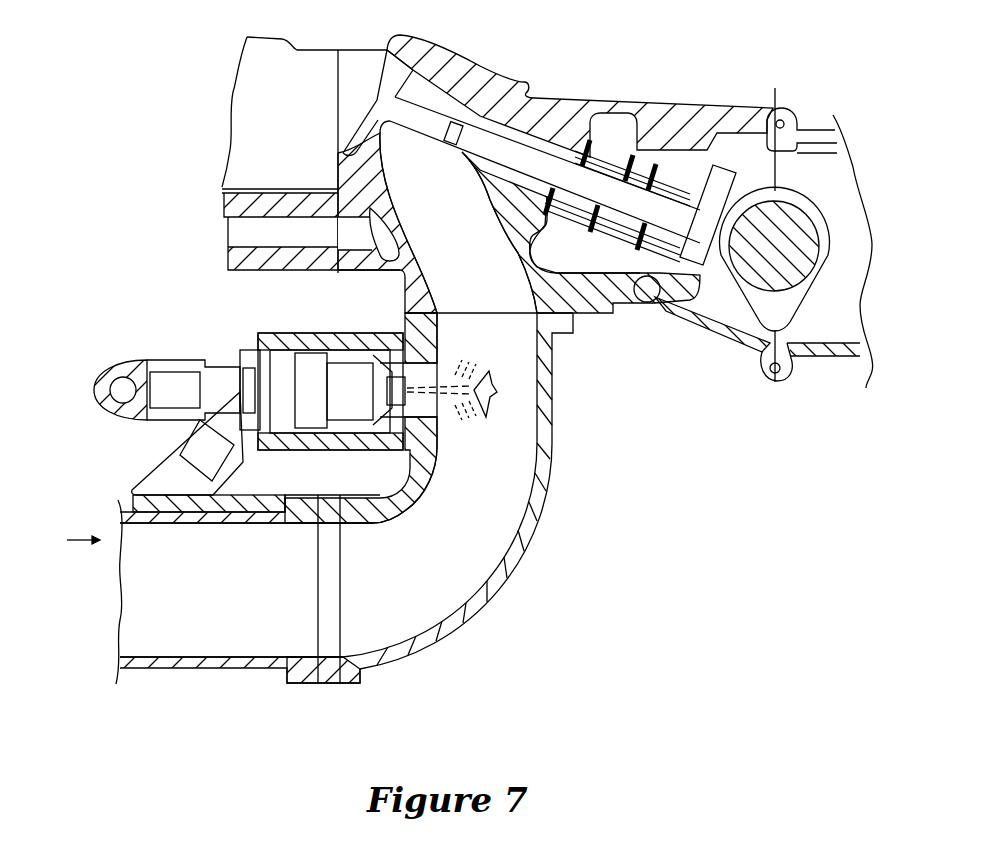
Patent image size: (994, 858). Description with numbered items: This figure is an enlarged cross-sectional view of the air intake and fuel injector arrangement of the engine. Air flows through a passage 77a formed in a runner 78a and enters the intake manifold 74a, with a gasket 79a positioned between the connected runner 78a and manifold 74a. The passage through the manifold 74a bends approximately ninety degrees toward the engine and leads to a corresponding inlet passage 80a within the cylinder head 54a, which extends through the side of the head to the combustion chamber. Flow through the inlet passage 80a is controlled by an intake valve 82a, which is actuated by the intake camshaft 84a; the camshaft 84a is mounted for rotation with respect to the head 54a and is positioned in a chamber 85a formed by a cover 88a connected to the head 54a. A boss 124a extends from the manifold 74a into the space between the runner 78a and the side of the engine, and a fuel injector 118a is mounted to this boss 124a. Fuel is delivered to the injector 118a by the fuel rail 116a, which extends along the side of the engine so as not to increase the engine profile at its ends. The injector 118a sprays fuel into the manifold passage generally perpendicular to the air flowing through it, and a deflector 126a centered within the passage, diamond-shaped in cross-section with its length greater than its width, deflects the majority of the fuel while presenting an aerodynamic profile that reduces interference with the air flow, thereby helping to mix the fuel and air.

The cylinder head 54a is at (668, 98).
The cover 88a is at (808, 130).
The intake valve 82a is at (360, 107).
The inlet passage 80a is at (497, 302).
The chamber 85a is at (715, 307).
The intake camshaft 84a is at (758, 283).
The fuel injector 118a is at (240, 350).
The boss 124a is at (293, 333).
The fuel rail 116a is at (127, 387).
The deflector 126a is at (490, 408).
The intake manifold 74a is at (522, 553).
The passage 77a is at (133, 583).
The runner 78a is at (196, 669).
The gasket 79a is at (330, 683).